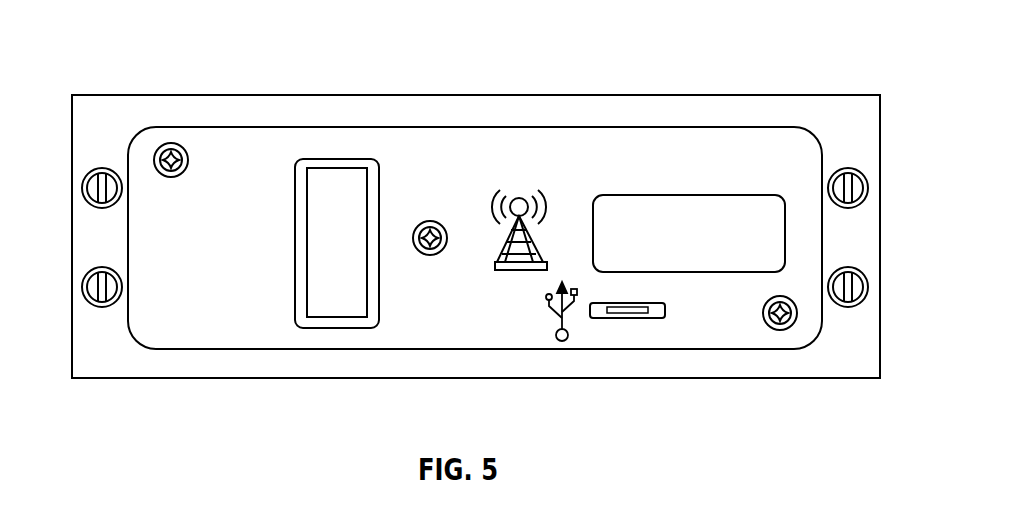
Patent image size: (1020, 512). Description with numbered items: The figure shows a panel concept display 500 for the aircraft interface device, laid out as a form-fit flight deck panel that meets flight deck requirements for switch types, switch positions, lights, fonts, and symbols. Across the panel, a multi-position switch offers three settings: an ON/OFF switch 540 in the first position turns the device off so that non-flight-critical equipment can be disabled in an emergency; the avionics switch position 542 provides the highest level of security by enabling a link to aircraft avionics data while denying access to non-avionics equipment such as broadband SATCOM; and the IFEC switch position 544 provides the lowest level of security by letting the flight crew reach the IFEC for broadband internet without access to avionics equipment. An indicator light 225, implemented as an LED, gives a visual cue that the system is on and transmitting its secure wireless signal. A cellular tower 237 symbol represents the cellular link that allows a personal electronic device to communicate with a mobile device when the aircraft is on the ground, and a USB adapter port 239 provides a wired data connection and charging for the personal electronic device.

The panel concept display 500 is at (114, 32).
The ON/OFF switch 540 is at (232, 188).
The avionics switch position 542 is at (157, 243).
The IFEC switch position 544 is at (262, 315).
The indicator light 225 is at (785, 218).
The cellular tower 237 is at (503, 273).
The USB adapter port 239 is at (648, 320).